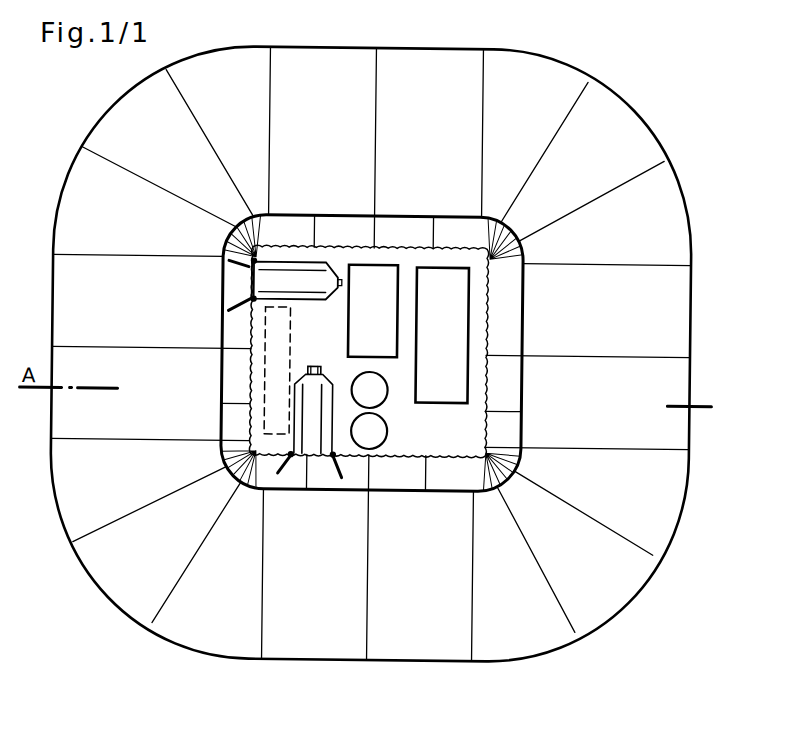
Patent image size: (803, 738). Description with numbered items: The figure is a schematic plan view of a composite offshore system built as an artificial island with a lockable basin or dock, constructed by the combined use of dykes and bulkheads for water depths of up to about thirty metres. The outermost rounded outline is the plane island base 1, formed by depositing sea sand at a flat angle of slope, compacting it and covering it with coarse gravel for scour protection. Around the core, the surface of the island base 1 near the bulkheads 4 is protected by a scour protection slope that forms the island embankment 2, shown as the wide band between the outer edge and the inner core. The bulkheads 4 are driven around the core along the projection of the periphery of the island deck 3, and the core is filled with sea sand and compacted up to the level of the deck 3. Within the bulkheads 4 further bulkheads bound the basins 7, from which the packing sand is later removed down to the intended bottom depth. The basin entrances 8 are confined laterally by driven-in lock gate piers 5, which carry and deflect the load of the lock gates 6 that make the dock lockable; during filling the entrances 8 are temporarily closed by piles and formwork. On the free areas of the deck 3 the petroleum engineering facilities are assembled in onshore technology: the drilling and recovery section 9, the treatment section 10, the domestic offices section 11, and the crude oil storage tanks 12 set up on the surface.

The island base 1 is at (622, 127).
The island embankment 2 is at (510, 325).
The island deck 3 is at (485, 425).
The bulkheads 4 is at (322, 247).
The lock gate piers 5 is at (294, 459).
The lock gates 6 is at (362, 467).
The basins 7 is at (309, 301).
The basin entrances 8 is at (228, 284).
The drilling and recovery section 9 is at (447, 340).
The treatment section 10 is at (384, 340).
The domestic offices section 11 is at (275, 380).
The tanks 12 is at (390, 439).